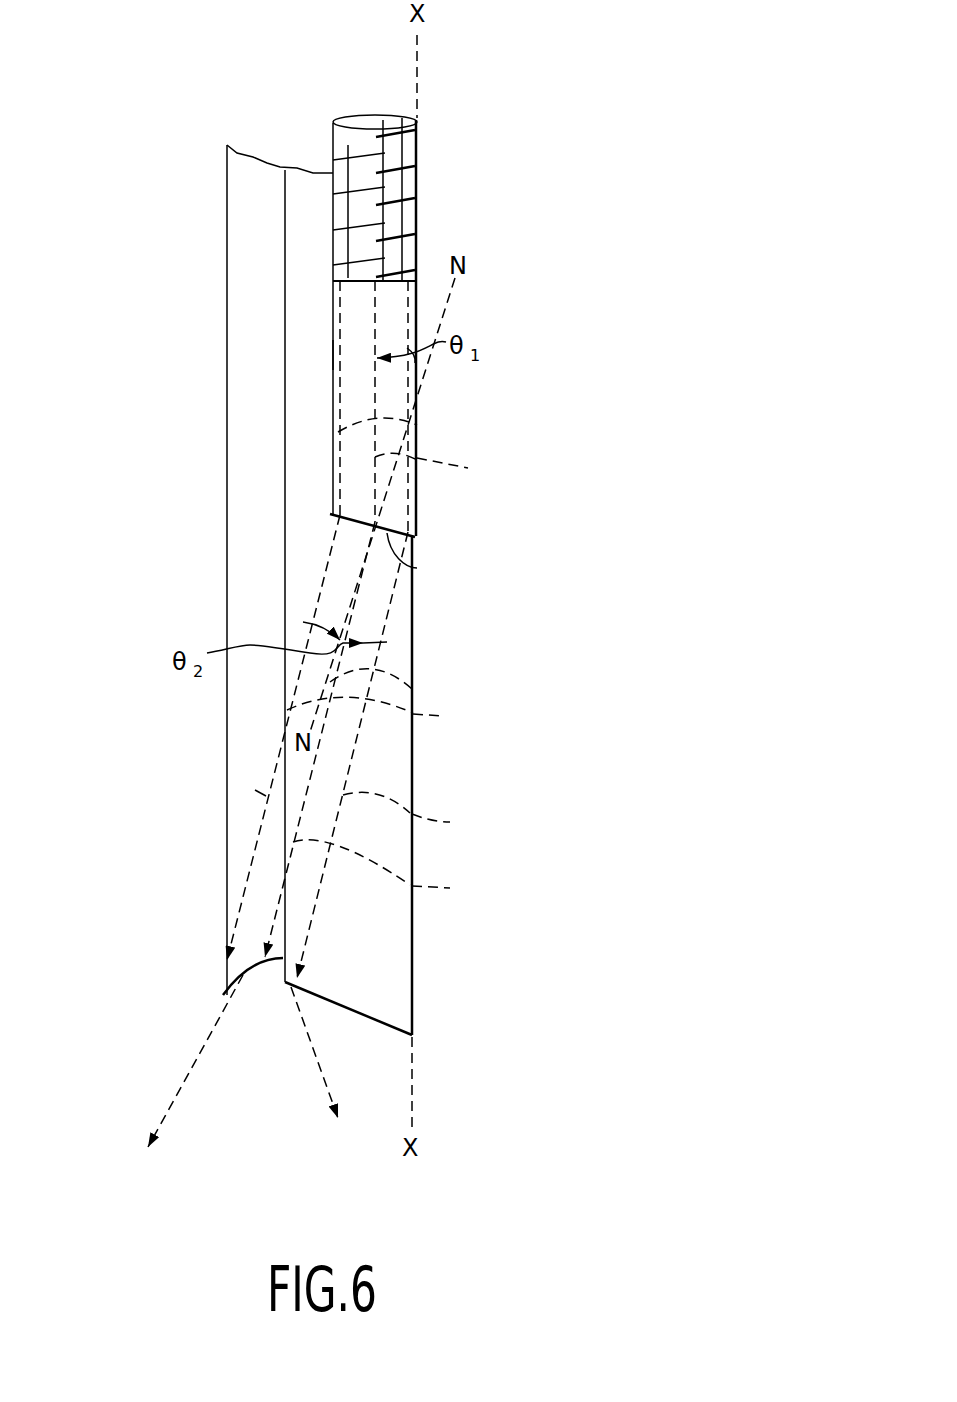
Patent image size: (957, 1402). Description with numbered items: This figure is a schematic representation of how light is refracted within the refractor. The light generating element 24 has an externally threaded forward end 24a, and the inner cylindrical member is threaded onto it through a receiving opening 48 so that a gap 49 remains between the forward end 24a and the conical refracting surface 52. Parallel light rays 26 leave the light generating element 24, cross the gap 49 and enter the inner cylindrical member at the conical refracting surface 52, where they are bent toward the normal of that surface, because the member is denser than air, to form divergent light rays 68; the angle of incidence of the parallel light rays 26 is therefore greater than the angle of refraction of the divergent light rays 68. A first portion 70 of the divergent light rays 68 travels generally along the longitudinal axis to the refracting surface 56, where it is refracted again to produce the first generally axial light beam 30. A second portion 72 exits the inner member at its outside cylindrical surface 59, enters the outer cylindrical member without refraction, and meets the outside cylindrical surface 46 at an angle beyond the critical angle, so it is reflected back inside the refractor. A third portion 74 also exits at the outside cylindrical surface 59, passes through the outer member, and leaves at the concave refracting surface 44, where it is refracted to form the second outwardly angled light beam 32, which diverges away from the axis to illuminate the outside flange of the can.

The light generating element 24 is at (334, 134).
The externally threaded forward end 24a is at (395, 218).
The parallel light rays 26 is at (417, 428).
The first generally axial light beam 30 is at (322, 1063).
The second outwardly angled light beam 32 is at (193, 1086).
The concave refracting surface 44 is at (246, 990).
The outside cylindrical surface 46 is at (228, 490).
The receiving opening 48 is at (330, 357).
The gap 49 is at (393, 390).
The conical refracting surface 52 is at (417, 568).
The refracting surface 56 is at (369, 1020).
The outside cylindrical surface 59 is at (290, 360).
The divergent light rays 68 is at (413, 692).
The first portion 70 is at (446, 818).
The second portion 72 is at (262, 793).
The third portion 74 is at (446, 883).